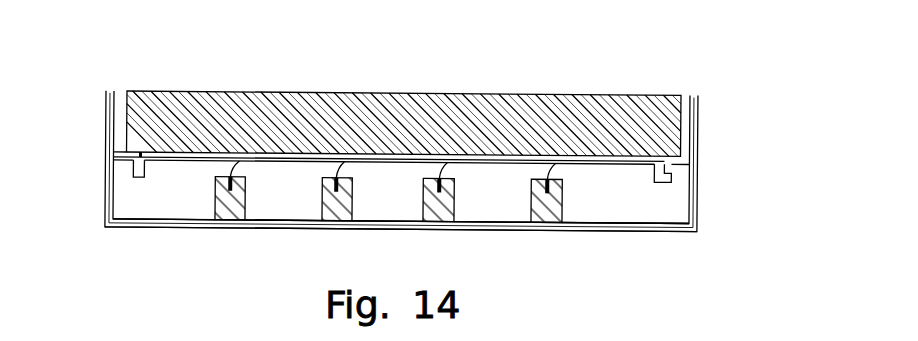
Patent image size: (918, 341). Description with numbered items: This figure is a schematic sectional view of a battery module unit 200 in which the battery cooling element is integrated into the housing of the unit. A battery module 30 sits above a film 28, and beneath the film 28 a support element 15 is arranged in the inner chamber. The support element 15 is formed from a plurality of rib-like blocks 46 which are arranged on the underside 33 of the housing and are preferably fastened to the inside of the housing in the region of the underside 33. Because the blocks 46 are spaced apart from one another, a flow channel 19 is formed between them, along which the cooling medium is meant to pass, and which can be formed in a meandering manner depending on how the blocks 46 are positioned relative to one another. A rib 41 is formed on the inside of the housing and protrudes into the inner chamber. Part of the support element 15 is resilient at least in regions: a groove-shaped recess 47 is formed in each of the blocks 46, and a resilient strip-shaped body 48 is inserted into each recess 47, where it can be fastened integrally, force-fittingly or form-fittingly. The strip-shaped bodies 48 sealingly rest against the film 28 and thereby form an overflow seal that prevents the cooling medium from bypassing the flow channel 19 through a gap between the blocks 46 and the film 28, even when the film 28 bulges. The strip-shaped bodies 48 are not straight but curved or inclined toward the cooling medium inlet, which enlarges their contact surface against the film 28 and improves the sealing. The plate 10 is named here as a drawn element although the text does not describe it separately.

The battery module assembly 200 is at (175, 66).
The battery module 30 is at (377, 112).
The housing plate 10 is at (400, 160).
The film 28 is at (389, 96).
The flow channel 19 is at (483, 185).
The rib 41 is at (156, 161).
The underside of the housing 33 is at (171, 229).
The support element 15 is at (408, 198).
The block 46 is at (410, 242).
The groove-shaped recess 47 is at (540, 189).
The strip-shaped body 48 is at (548, 167).